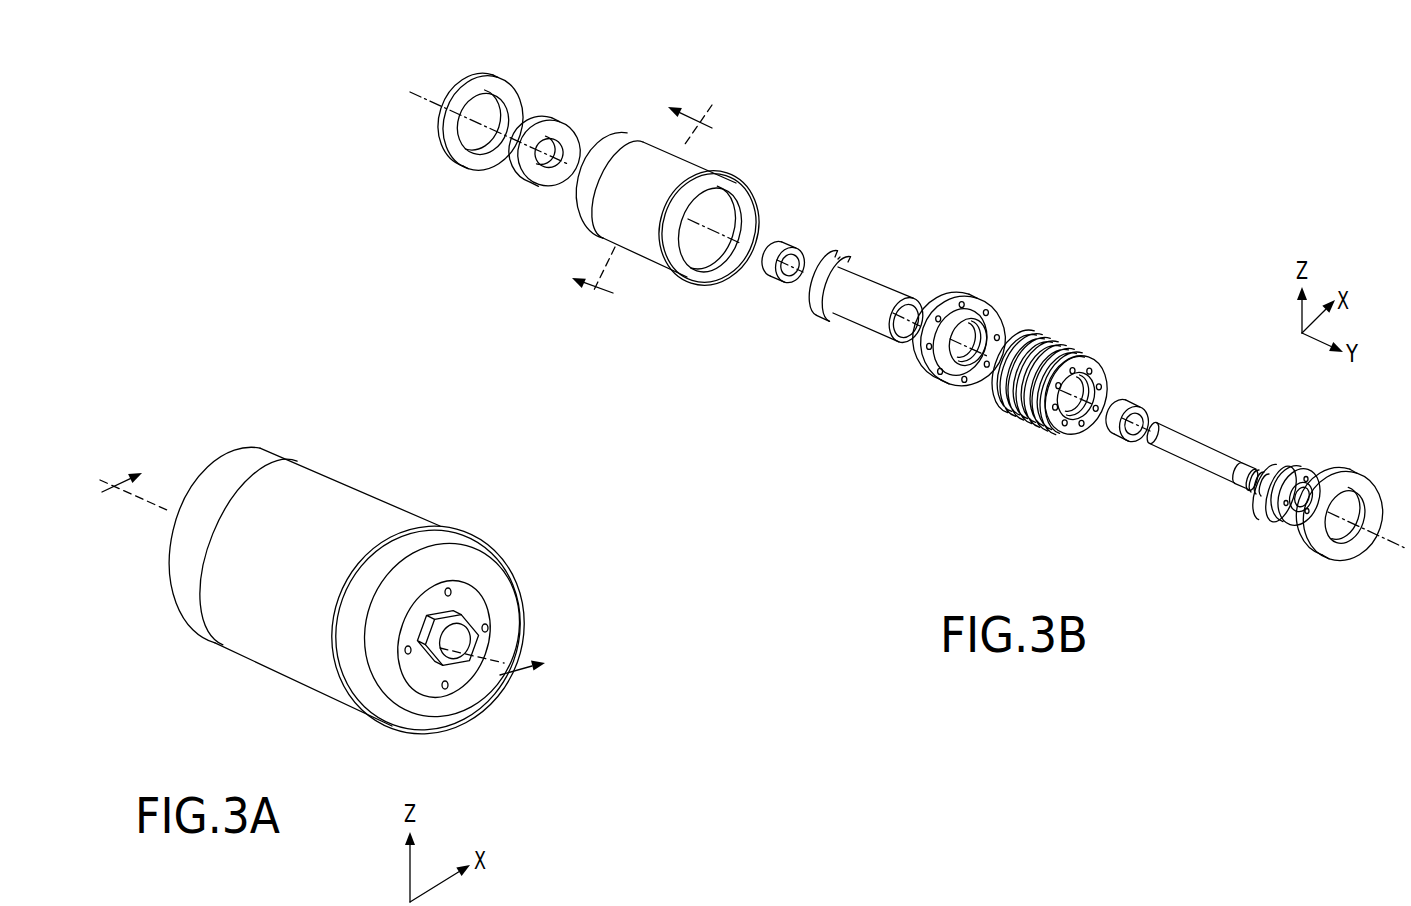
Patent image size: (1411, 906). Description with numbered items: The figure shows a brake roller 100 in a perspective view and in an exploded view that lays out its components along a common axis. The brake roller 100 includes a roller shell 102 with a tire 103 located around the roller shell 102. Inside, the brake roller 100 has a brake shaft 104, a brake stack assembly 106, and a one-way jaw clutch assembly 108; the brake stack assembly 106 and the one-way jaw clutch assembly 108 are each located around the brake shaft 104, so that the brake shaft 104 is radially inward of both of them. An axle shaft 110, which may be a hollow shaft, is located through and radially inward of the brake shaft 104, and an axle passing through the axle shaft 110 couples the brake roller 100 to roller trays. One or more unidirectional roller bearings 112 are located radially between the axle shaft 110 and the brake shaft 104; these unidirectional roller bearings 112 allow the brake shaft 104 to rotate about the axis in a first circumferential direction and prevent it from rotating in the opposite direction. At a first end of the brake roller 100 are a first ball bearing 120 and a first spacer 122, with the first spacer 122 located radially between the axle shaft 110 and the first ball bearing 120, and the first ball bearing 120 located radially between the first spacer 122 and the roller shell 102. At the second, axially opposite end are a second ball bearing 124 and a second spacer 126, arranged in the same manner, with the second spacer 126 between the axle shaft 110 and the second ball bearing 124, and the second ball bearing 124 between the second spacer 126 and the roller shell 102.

In FIG. 3A, the brake roller 100 is at (319, 551).
In FIG. 3B, the brake roller 100 is at (892, 341).
In FIG. 3A, the roller shell 102 is at (447, 533).
In FIG. 3B, the roller shell 102 is at (727, 180).
In FIG. 3A, the tire 103 is at (288, 544).
In FIG. 3B, the tire 103 is at (624, 194).
In FIG. 3B, the brake shaft 104 is at (900, 280).
In FIG. 3B, the brake stack assembly 106 is at (1083, 357).
In FIG. 3B, the one-way jaw clutch assembly 108 is at (943, 377).
In FIG. 3A, the axle shaft 110 is at (463, 648).
In FIG. 3B, the axle shaft 110 is at (1217, 447).
In FIG. 3B, the unidirectional roller bearings 112 is at (773, 280).
In FIG. 3B, the first ball bearing 120 is at (450, 150).
In FIG. 3B, the first spacer 122 is at (537, 180).
In FIG. 3A, the second ball bearing 124 is at (493, 593).
In FIG. 3B, the second ball bearing 124 is at (1330, 553).
In FIG. 3A, the second spacer 126 is at (417, 678).
In FIG. 3B, the second spacer 126 is at (1272, 525).